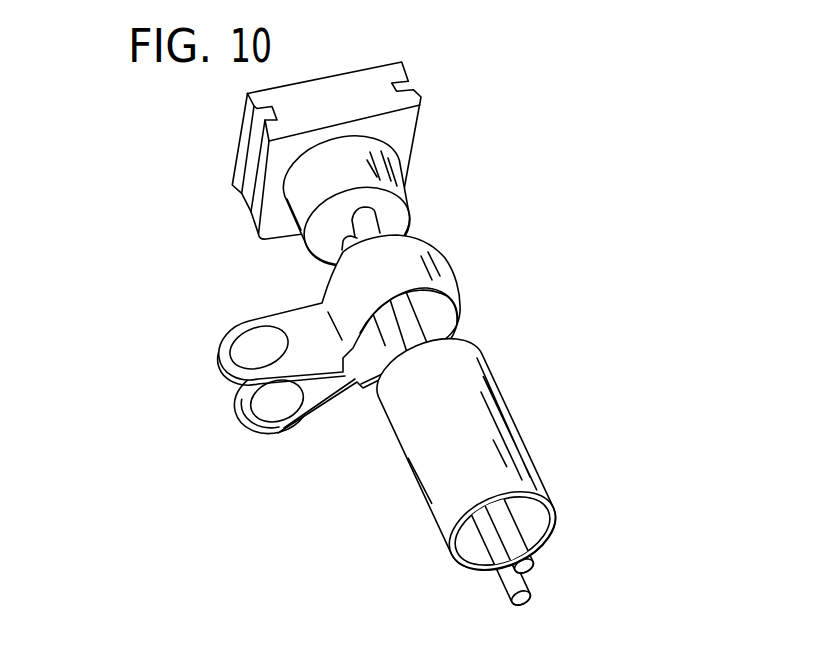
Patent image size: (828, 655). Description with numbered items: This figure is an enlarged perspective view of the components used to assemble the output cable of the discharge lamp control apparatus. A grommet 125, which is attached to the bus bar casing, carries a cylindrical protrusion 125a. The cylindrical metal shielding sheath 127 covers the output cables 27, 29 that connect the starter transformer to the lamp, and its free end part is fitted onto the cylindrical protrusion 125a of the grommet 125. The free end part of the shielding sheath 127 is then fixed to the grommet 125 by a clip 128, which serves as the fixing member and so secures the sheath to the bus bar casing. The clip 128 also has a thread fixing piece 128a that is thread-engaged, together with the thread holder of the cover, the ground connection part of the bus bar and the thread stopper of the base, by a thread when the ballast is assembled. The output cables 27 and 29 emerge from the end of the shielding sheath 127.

The grommet 125 is at (400, 133).
The cylindrical protrusion 125a is at (358, 172).
The clip 128 is at (410, 265).
The thread fixing piece 128a is at (278, 436).
The shielding sheath 127 is at (487, 422).
The output cable 29 is at (516, 570).
The output cable 27 is at (515, 605).